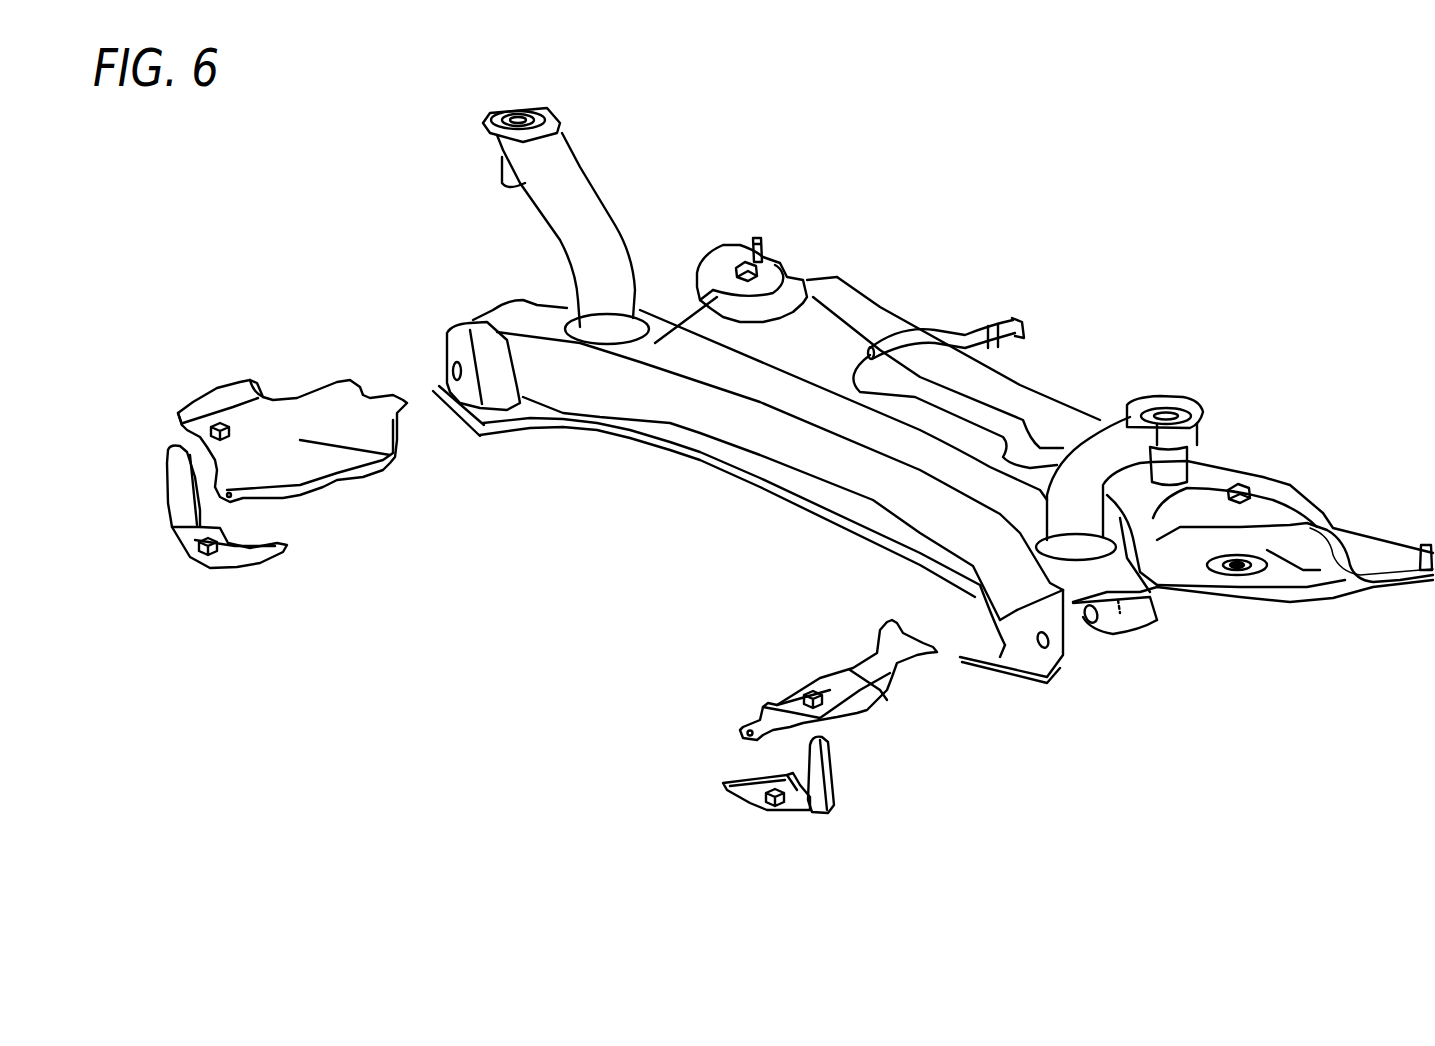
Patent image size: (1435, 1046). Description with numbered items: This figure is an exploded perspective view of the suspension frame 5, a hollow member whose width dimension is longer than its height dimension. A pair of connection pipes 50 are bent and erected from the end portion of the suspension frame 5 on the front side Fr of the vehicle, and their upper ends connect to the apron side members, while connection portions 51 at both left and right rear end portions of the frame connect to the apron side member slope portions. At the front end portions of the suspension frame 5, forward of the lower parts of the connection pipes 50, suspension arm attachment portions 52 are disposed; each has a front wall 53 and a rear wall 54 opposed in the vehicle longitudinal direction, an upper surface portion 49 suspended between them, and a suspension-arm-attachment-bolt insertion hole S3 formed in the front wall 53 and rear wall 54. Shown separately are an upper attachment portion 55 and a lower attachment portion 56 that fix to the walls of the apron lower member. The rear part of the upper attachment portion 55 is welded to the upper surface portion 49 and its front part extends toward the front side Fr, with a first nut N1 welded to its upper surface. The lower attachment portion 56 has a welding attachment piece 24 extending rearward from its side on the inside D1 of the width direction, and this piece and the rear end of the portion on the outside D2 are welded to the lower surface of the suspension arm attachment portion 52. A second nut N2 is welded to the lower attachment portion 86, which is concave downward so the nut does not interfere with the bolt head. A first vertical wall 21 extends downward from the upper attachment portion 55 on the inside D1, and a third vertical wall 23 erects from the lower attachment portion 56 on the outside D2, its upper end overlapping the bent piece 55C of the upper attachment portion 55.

The suspension frame 5 is at (1048, 248).
The first vertical wall 21 is at (313, 457).
The third vertical wall 23 is at (177, 488).
The welding attachment piece 24 is at (278, 553).
The upper surface portion 49 is at (473, 320).
The connection pipes 50 is at (587, 203).
The connection portions 51 is at (783, 260).
The suspension arm attachment portions 52 is at (446, 297).
The front wall 53 is at (443, 387).
The rear wall 54 is at (1107, 613).
The upper attachment portion 55 is at (222, 385).
The bent piece 55C is at (245, 390).
The lower attachment portion 56 is at (163, 405).
The lower attachment portion 86 is at (190, 565).
The first nut N1 is at (232, 423).
The second nut N2 is at (209, 560).
The suspension-arm-attachment-bolt insertion hole S3 is at (443, 347).
The inside of the width direction of the vehicle D1 is at (470, 494).
The outside of the width direction of the vehicle D2 is at (505, 468).
The front side of the vehicle Fr is at (555, 620).